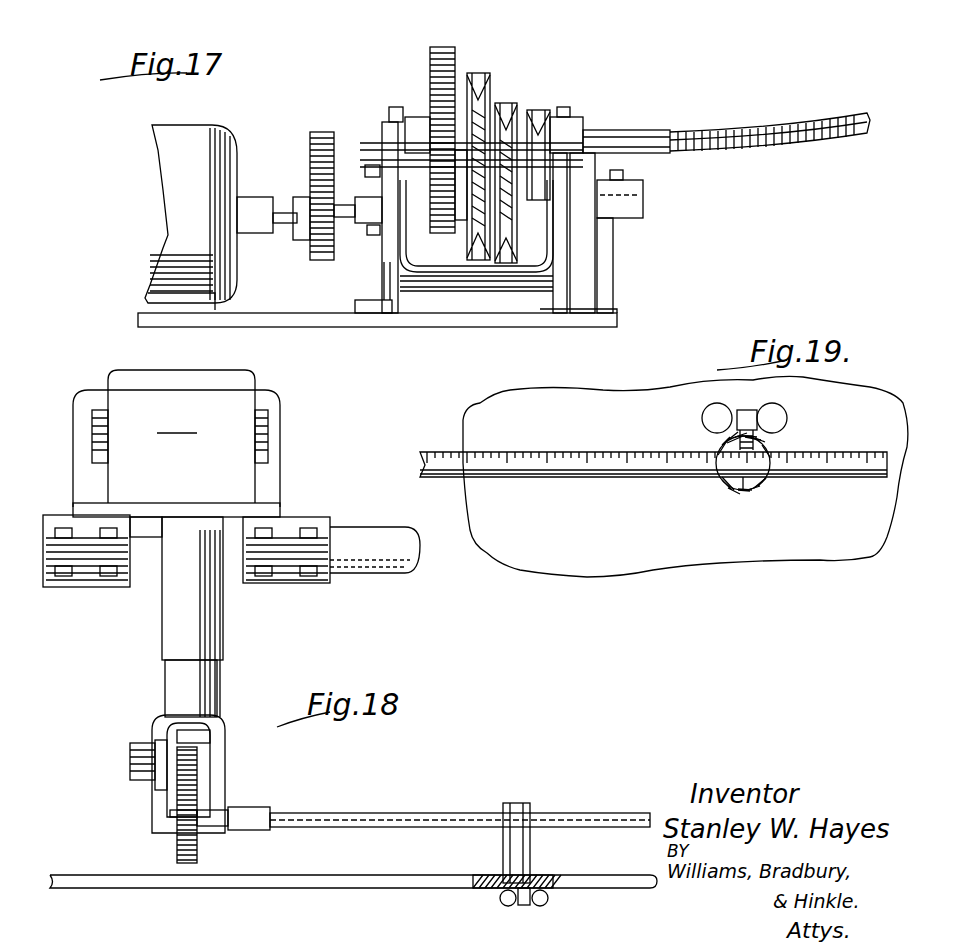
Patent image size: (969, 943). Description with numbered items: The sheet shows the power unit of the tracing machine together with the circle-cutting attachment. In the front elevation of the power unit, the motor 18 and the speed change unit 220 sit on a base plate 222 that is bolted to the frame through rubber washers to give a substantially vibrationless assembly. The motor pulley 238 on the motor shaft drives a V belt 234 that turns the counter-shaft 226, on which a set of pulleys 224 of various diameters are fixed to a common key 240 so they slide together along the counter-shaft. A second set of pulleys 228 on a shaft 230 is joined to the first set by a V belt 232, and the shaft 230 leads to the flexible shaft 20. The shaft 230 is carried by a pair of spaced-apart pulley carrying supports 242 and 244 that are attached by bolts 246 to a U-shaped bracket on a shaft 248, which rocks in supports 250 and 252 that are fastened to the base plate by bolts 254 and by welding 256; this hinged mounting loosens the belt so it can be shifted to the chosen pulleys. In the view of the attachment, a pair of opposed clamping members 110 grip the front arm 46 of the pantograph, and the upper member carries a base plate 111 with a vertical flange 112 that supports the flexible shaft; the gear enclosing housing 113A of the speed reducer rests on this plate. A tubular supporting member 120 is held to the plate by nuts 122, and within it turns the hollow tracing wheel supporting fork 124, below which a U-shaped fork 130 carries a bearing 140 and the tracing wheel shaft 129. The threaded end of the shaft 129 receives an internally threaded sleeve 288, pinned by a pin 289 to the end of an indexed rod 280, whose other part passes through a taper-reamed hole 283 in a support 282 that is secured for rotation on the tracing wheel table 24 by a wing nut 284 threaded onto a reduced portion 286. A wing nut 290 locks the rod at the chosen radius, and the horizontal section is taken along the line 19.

In FIG. 17, the motor 18 is at (190, 242).
In FIG. 17, the flexible shaft 20 is at (740, 130).
In FIG. 17, the speed change unit 220 is at (621, 251).
In FIG. 17, the base plate 222 is at (513, 320).
In FIG. 17, the pulleys 224 is at (540, 140).
In FIG. 17, the counter-shaft 226 is at (385, 122).
In FIG. 17, the pulleys 228 is at (432, 52).
In FIG. 17, the shaft 230 is at (413, 117).
In FIG. 17, the V belt 232 is at (446, 47).
In FIG. 17, the V belt 234 is at (317, 128).
In FIG. 17, the motor pulley 238 is at (310, 172).
In FIG. 17, the key 240 is at (373, 165).
In FIG. 17, the pulley carrying support 242 is at (378, 178).
In FIG. 17, the pulley carrying support 244 is at (590, 135).
In FIG. 17, the bolts 246 is at (540, 227).
In FIG. 17, the shaft 248 is at (440, 280).
In FIG. 17, the support 250 is at (387, 313).
In FIG. 17, the support 252 is at (580, 300).
In FIG. 17, the bolts 254 is at (363, 305).
In FIG. 17, the welding 256 is at (570, 313).
In FIG. 18, the vertical flange 112 is at (275, 418).
In FIG. 18, the gear enclosing housing 113A is at (181, 436).
In FIG. 18, the base plate 111 is at (270, 507).
In FIG. 18, the clamping members 110 is at (327, 523).
In FIG. 18, the front arm 46 is at (407, 573).
In FIG. 18, the nuts 122 is at (162, 523).
In FIG. 18, the tubular supporting member 120 is at (223, 627).
In FIG. 18, the tracing wheel supporting fork 124 is at (215, 690).
In FIG. 18, the fork 130 is at (223, 767).
In FIG. 18, the bearing 140 is at (140, 747).
In FIG. 18, the shaft 129 is at (243, 810).
In FIG. 18, the pin 289 is at (283, 817).
In FIG. 18, the internally threaded sleeve 288 is at (260, 830).
In FIG. 18, the indexed rod 280 is at (413, 803).
In FIG. 19, the indexed rod 280 is at (577, 477).
In FIG. 18, the support 282 is at (520, 807).
In FIG. 19, the support 282 is at (733, 490).
In FIG. 18, the section line 19 is at (440, 813).
In FIG. 18, the tracing wheel table 24 is at (587, 888).
In FIG. 18, the reduced portion 286 is at (490, 890).
In FIG. 18, the wing nut 284 is at (517, 911).
In FIG. 19, the wing nut 290 is at (787, 415).
In FIG. 19, the taper reaming 283 is at (770, 480).